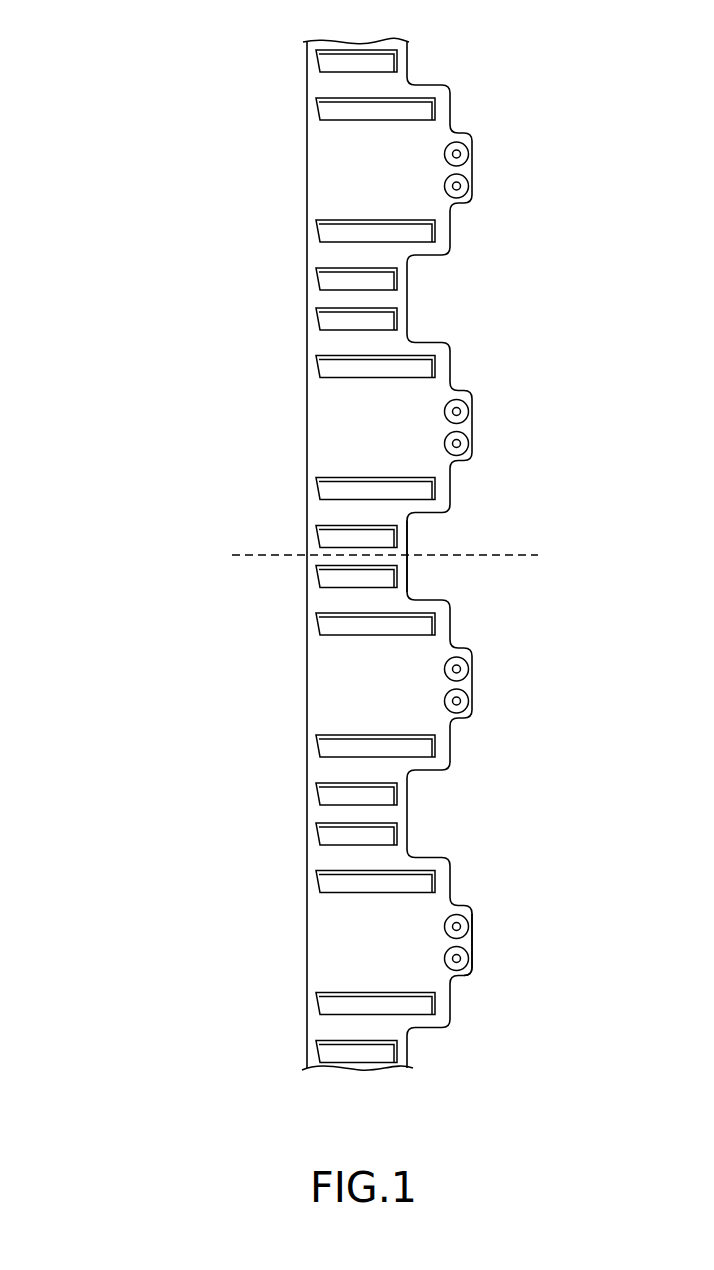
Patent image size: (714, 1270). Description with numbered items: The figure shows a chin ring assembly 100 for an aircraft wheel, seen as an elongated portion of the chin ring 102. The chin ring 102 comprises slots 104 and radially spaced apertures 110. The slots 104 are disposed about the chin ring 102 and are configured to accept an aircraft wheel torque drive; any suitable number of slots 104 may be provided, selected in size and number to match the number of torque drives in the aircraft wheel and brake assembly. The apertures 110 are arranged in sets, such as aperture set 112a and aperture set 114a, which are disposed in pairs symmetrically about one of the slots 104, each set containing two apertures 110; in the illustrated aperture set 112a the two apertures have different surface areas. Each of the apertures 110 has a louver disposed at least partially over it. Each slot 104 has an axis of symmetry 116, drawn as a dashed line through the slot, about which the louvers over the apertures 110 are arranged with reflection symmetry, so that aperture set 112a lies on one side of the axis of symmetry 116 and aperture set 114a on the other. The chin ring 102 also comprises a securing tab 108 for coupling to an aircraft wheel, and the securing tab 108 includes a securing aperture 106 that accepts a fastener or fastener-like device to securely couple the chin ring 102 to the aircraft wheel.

The chin ring assembly 100 is at (128, 188).
The chin ring 102 is at (337, 432).
The slots 104 is at (408, 522).
The securing aperture 106 is at (457, 926).
The securing tab 108 is at (474, 968).
The apertures 110 is at (420, 623).
The aperture set 112a is at (297, 477).
The aperture set 114a is at (297, 563).
The axis of symmetry 116 is at (540, 555).